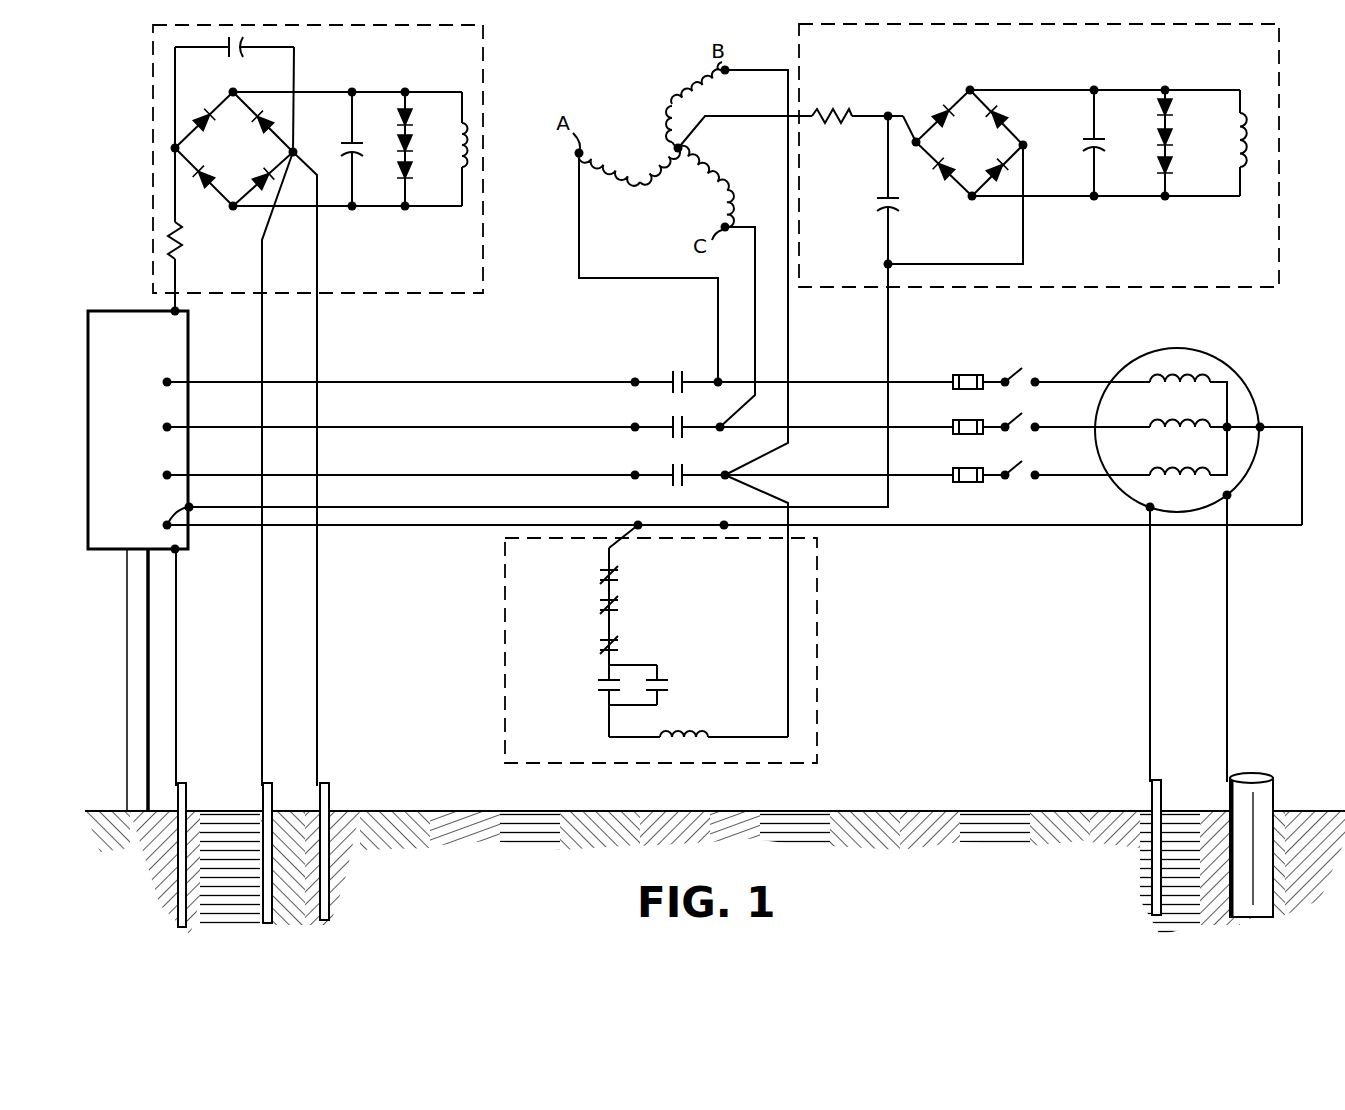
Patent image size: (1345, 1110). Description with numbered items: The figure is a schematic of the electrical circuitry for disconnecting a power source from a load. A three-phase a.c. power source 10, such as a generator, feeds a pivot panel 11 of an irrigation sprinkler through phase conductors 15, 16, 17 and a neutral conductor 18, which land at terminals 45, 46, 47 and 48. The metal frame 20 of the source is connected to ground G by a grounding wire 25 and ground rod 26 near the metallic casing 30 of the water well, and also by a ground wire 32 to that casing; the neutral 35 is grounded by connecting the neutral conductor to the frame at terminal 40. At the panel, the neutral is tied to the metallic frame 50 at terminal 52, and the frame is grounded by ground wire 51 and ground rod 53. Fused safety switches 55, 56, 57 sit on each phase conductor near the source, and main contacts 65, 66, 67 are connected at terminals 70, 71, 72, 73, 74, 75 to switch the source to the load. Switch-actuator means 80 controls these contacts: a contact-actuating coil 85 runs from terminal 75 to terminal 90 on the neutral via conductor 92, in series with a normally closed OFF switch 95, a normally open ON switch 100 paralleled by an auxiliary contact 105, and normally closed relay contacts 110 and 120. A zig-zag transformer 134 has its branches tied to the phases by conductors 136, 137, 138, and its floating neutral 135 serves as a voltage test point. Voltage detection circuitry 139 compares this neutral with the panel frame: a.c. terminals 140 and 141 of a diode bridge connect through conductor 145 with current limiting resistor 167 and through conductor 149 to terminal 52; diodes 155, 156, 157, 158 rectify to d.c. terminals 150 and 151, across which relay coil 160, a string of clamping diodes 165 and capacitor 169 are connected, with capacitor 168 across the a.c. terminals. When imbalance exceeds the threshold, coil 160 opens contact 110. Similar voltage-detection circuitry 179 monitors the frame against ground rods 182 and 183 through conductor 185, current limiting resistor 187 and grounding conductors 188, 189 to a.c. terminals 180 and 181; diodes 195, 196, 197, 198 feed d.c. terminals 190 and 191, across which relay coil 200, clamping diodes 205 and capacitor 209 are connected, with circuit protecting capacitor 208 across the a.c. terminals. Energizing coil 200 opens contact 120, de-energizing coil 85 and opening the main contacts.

The three-phase a.c. power source 10 is at (1130, 366).
The pivot panel 11 is at (118, 309).
The phase conductor 15 is at (552, 380).
The phase conductor 16 is at (558, 426).
The phase conductor 17 is at (552, 474).
The neutral conductor 18 is at (548, 524).
The metal frame 20 is at (1212, 362).
The grounding wire 25 is at (1152, 700).
The ground rod 26 is at (1162, 792).
The metallic casing 30 is at (1277, 792).
The ground wire 32 is at (1228, 710).
The neutral 35 is at (1230, 422).
The terminal 40 is at (1263, 431).
The terminal 45 is at (164, 382).
The terminal 46 is at (164, 425).
The terminal 47 is at (164, 473).
The terminal 48 is at (163, 524).
The metallic frame 50 is at (86, 382).
The ground wire 51 is at (177, 632).
The terminal 52 is at (192, 505).
The ground rod 53 is at (186, 796).
The fused safety switch 55 is at (948, 376).
The fused safety switch 56 is at (966, 419).
The fused safety switch 57 is at (968, 469).
The main contact 65 is at (674, 368).
The main contact 66 is at (680, 422).
The main contact 67 is at (682, 466).
The terminal 70 is at (634, 378).
The terminal 71 is at (719, 378).
The terminal 72 is at (634, 423).
The terminal 73 is at (721, 422).
The terminal 74 is at (635, 471).
The terminal 75 is at (727, 470).
The switch-actuator means 80 is at (820, 655).
The contact-actuating coil 85 is at (674, 732).
The terminal 90 is at (640, 522).
The conductor 92 is at (786, 654).
The OFF switch 95 is at (616, 646).
The ON switch 100 is at (600, 688).
The auxiliary contact 105 is at (662, 682).
The relay contact 110 is at (598, 576).
The relay contact 120 is at (598, 607).
The zig-zag transformer 134 is at (664, 104).
The floating neutral 135 is at (684, 146).
The conductor 136 is at (578, 252).
The conductor 137 is at (786, 222).
The conductor 138 is at (754, 282).
The voltage detection circuitry 139 is at (1124, 295).
The a.c. terminal 140 is at (916, 138).
The a.c. terminal 141 is at (1026, 145).
The conductor 145 is at (858, 114).
The conductor 149 is at (948, 264).
The d.c. terminal 150 is at (970, 87).
The d.c. terminal 151 is at (972, 199).
The diode 155 is at (942, 110).
The diode 156 is at (1003, 114).
The diode 157 is at (994, 170).
The diode 158 is at (939, 170).
The relay coil 160 is at (1242, 148).
The string of clamping diodes 165 is at (1174, 134).
The current limiting resistor 167 is at (810, 112).
The capacitor 168 is at (880, 207).
The capacitor 169 is at (1098, 142).
The voltage-detection circuitry 179 is at (152, 182).
The a.c. terminal 180 is at (172, 146).
The a.c. terminal 181 is at (296, 151).
The ground rod 182 is at (272, 796).
The ground rod 183 is at (329, 796).
The conductor 185 is at (172, 209).
The current limiting resistor 187 is at (172, 247).
The grounding conductor 188 is at (262, 612).
The grounding conductor 189 is at (318, 612).
The d.c. terminal 190 is at (236, 90).
The d.c. terminal 191 is at (231, 212).
The diode 195 is at (205, 115).
The diode 196 is at (258, 122).
The diode 197 is at (262, 178).
The diode 198 is at (203, 174).
The relay coil 200 is at (474, 148).
The string of clamping diodes 205 is at (413, 141).
The circuit protecting capacitor 208 is at (246, 40).
The capacitor 209 is at (362, 150).
The ground G is at (955, 810).